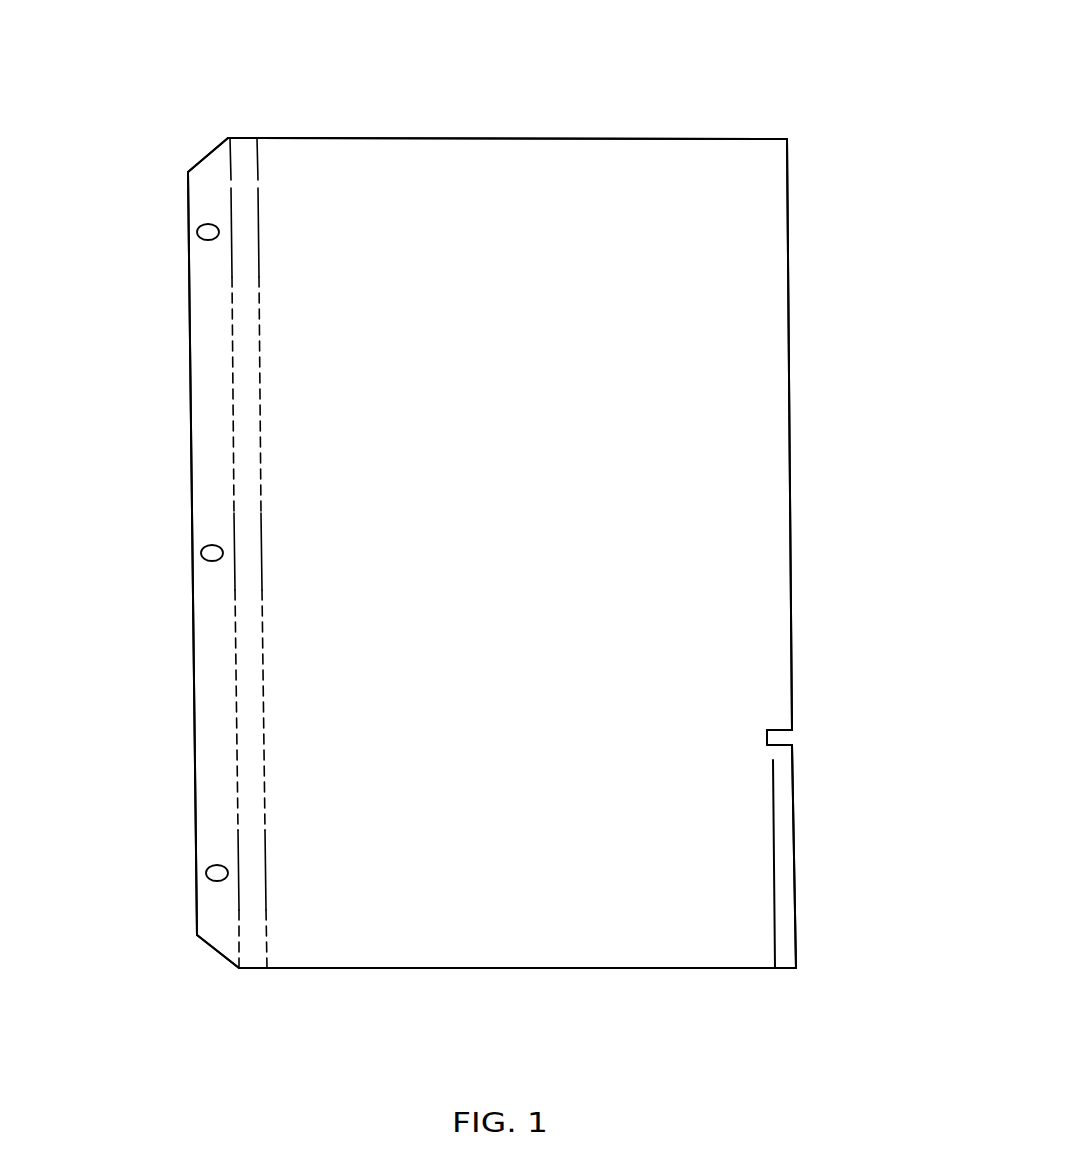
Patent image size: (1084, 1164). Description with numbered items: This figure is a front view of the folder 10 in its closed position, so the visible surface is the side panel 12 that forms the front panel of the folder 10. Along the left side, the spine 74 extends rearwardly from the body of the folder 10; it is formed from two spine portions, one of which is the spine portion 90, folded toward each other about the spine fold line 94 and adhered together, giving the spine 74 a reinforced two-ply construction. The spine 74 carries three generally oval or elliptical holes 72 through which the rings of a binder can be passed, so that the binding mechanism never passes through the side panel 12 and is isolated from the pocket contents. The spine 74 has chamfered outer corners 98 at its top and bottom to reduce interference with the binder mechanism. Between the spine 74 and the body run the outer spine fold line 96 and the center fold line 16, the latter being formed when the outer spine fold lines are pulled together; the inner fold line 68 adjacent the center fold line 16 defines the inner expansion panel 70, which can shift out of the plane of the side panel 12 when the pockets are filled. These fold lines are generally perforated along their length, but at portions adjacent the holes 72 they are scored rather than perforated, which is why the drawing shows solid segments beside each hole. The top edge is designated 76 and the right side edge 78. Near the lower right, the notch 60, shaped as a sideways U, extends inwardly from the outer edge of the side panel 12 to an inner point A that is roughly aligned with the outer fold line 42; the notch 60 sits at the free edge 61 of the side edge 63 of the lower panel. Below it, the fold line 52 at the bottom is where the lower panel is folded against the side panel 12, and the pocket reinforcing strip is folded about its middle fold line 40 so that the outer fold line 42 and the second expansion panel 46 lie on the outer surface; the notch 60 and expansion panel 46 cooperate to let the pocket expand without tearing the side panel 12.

The folder 10 is at (364, 92).
The side panel 12 is at (518, 152).
The center fold line 16 is at (233, 434).
The middle fold line 40 is at (795, 893).
The outer fold line 42 is at (773, 873).
The second expansion panel 46 is at (787, 930).
The fold line 52 is at (504, 964).
The notch 60 is at (793, 737).
The free edge 61 is at (793, 750).
The side edge 63 is at (810, 828).
The inner fold line 68 is at (267, 868).
The inner expansion panel 70 is at (253, 777).
The holes 72 is at (197, 232).
The spine 74 is at (190, 310).
The top edge 76 is at (600, 138).
The right side edge 78 is at (791, 497).
The spine portion 90 is at (205, 757).
The spine fold line 94 is at (190, 664).
The outer spine fold line 96 is at (236, 547).
The chamfered outer corners 98 is at (213, 155).
The inner point A is at (766, 736).